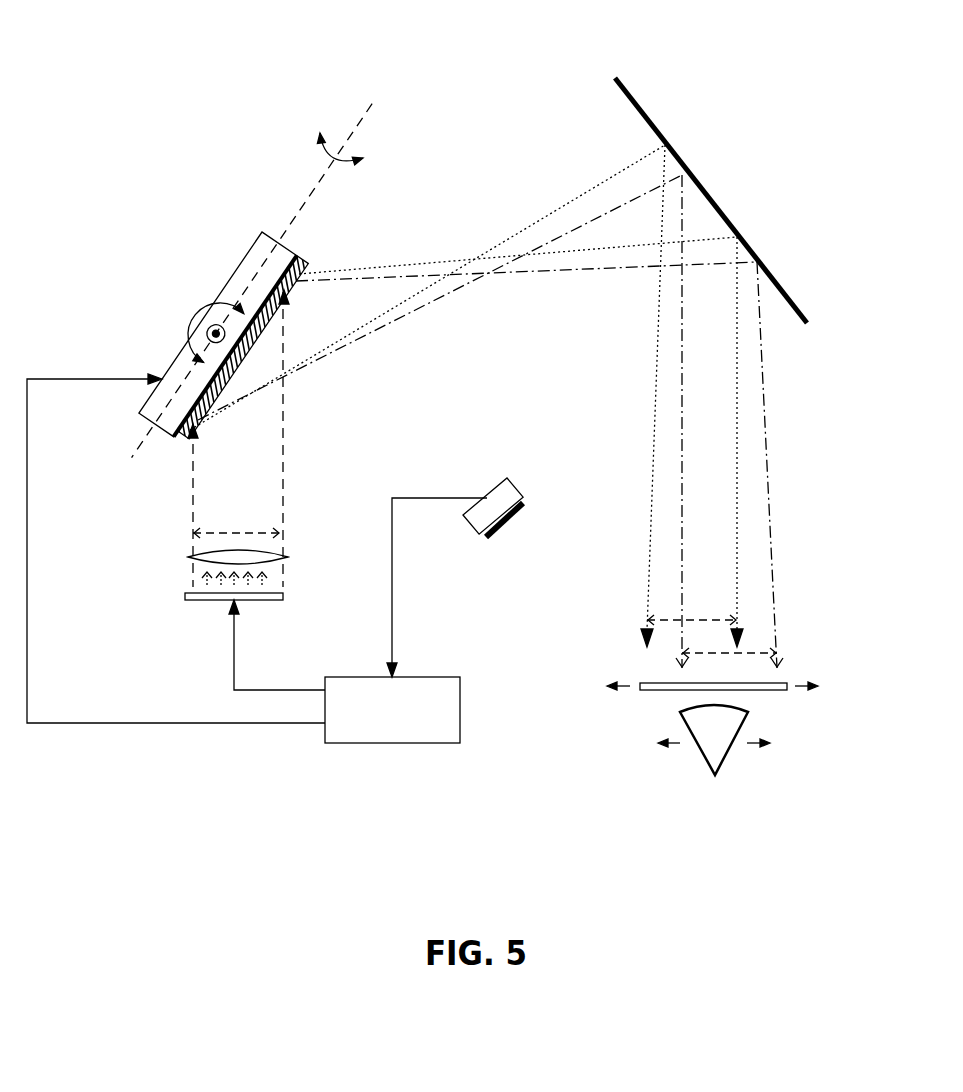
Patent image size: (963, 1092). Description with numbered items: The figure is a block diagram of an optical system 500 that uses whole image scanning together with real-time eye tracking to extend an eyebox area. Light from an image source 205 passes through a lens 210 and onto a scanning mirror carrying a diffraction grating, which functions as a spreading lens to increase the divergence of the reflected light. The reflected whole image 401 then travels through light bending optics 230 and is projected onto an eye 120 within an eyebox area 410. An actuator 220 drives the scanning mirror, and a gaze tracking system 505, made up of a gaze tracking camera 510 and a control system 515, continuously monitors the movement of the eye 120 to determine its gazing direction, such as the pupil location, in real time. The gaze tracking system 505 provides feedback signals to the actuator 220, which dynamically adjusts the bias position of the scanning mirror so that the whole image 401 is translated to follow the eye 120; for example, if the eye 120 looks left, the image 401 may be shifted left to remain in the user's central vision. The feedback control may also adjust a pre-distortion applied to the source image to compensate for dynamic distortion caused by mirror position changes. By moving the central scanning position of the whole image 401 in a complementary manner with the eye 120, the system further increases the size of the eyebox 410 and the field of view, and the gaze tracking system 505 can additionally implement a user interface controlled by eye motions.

The optical system 500 is at (204, 66).
The actuator 220 is at (259, 285).
The light bending optics 230 is at (700, 182).
The gaze tracking system 505 is at (530, 434).
The gaze tracking camera 510 is at (497, 486).
The lens 210 is at (190, 557).
The image source 205 is at (202, 603).
The control system 515 is at (446, 733).
The whole image 401 is at (652, 617).
The eyebox area 410 is at (777, 692).
The eye 120 is at (729, 734).